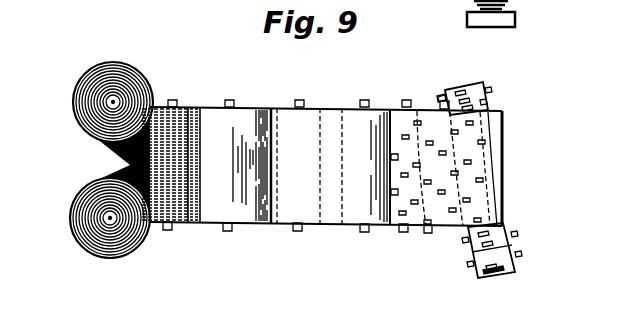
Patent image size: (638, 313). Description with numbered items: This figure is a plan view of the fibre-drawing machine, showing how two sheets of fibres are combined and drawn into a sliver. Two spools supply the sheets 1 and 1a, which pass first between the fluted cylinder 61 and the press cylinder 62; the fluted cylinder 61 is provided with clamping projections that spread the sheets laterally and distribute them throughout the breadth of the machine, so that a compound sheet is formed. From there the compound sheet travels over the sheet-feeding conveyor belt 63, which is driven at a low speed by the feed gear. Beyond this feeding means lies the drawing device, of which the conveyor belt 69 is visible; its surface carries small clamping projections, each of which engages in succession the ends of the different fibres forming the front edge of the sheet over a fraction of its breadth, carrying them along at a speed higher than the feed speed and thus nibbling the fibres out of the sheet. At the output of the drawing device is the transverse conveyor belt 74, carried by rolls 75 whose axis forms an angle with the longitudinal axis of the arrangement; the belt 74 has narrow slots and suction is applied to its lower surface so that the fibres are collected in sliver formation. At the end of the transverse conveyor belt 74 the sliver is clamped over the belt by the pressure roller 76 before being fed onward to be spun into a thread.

The sheet 1 is at (98, 257).
The sheet 1a is at (127, 73).
The fluted cylinder 61 is at (175, 102).
The press cylinder 62 is at (215, 205).
The sheet-feeding conveyor belt 63 is at (332, 110).
The conveyor belt 69 is at (447, 224).
The transverse conveyor belt 74 is at (478, 88).
The rolls 75 is at (440, 100).
The pressure roller 76 is at (504, 272).